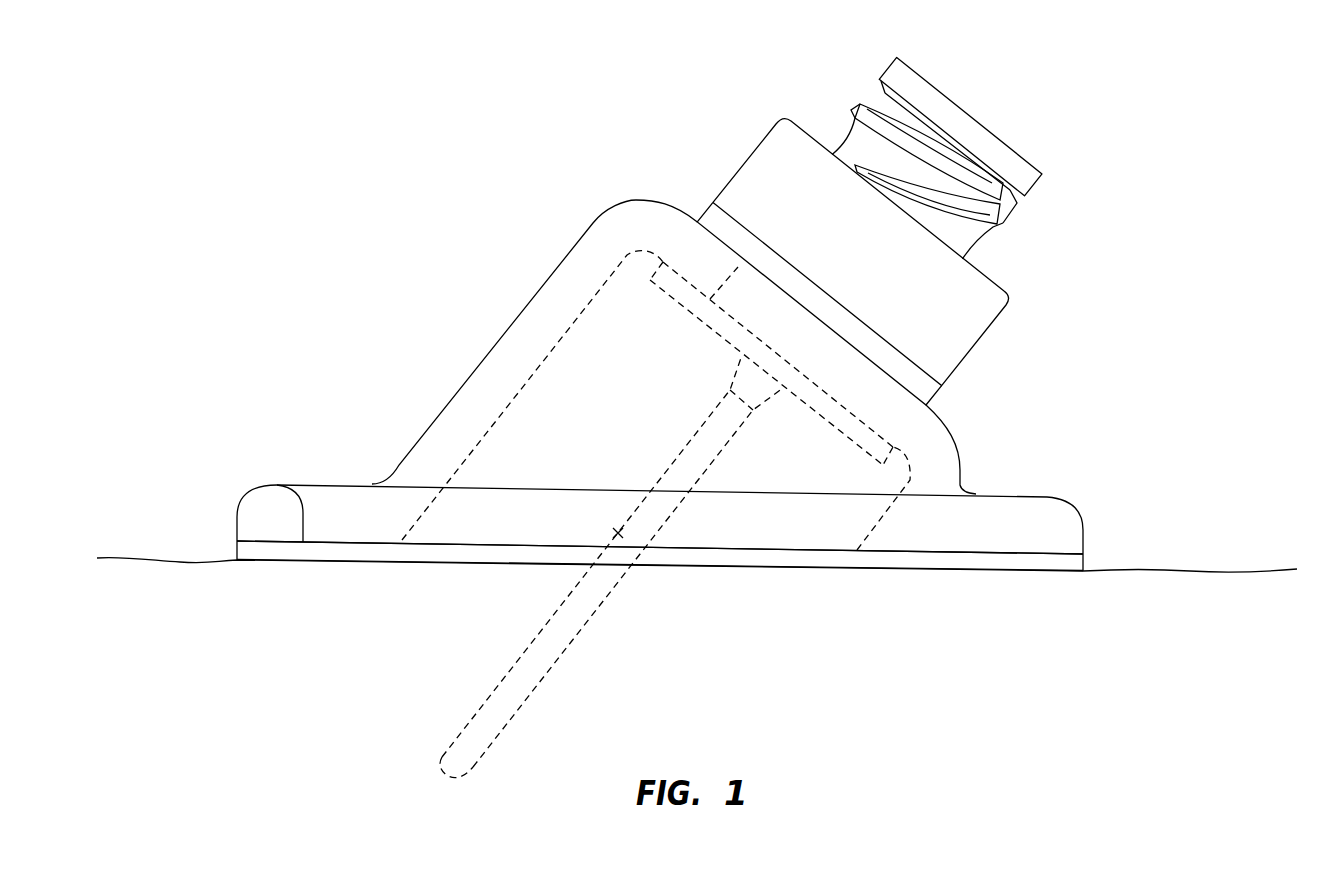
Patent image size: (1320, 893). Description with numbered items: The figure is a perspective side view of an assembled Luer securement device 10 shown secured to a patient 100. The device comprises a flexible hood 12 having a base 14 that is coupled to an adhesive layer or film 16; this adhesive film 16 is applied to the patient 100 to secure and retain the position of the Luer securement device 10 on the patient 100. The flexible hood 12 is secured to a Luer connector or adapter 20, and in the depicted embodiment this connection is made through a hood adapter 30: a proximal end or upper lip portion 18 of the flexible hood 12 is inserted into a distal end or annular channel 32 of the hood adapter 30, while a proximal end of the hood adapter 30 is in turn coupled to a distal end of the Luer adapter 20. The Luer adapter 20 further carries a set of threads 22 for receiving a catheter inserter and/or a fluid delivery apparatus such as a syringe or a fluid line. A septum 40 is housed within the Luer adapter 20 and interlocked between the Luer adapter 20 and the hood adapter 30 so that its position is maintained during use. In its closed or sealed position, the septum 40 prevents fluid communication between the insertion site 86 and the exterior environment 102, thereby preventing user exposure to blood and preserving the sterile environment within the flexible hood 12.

The Luer securement device 10 is at (1168, 143).
The flexible hood 12 is at (562, 263).
The base 14 is at (280, 483).
The adhesive layer or film 16 is at (320, 560).
The upper lip portion 18 is at (695, 255).
The Luer connector or adapter 20 is at (771, 146).
The set of threads 22 is at (1007, 224).
The hood adapter 30 is at (870, 383).
The annular channel 32 is at (825, 387).
The septum 40 is at (923, 68).
The insertion site 86 is at (618, 533).
The patient 100 is at (1210, 567).
The exterior environment 102 is at (219, 131).